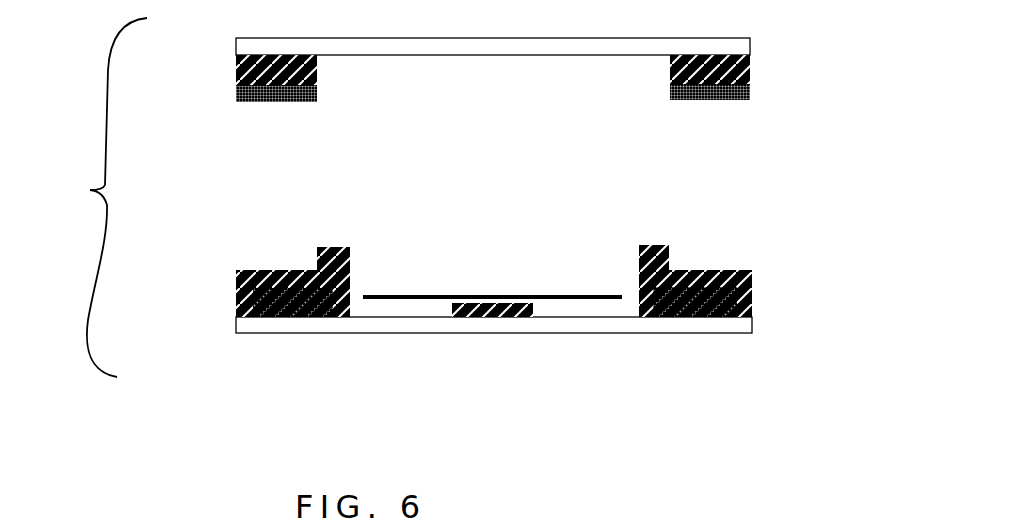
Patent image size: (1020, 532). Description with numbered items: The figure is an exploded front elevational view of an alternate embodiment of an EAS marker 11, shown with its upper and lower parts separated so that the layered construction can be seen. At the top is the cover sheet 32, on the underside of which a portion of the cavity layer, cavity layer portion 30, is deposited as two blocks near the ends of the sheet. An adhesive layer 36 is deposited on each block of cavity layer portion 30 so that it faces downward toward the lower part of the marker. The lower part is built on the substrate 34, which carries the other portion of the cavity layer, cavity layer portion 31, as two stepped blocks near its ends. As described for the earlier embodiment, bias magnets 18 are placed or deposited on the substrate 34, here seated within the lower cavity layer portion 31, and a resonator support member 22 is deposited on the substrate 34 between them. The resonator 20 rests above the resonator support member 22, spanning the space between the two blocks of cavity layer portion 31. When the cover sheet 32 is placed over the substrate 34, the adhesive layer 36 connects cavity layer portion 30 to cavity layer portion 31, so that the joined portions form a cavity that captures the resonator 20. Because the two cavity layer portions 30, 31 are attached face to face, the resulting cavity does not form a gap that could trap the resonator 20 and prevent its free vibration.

The EAS marker 11 is at (90, 197).
The bias magnets 18 is at (292, 317).
The resonator 20 is at (557, 295).
The resonator support members 22 is at (490, 317).
The cavity layer portion 30 is at (317, 72).
The cavity layer portion 31 is at (285, 271).
The cover sheet 32 is at (750, 50).
The substrate 34 is at (752, 327).
The adhesive layer 36 is at (310, 100).